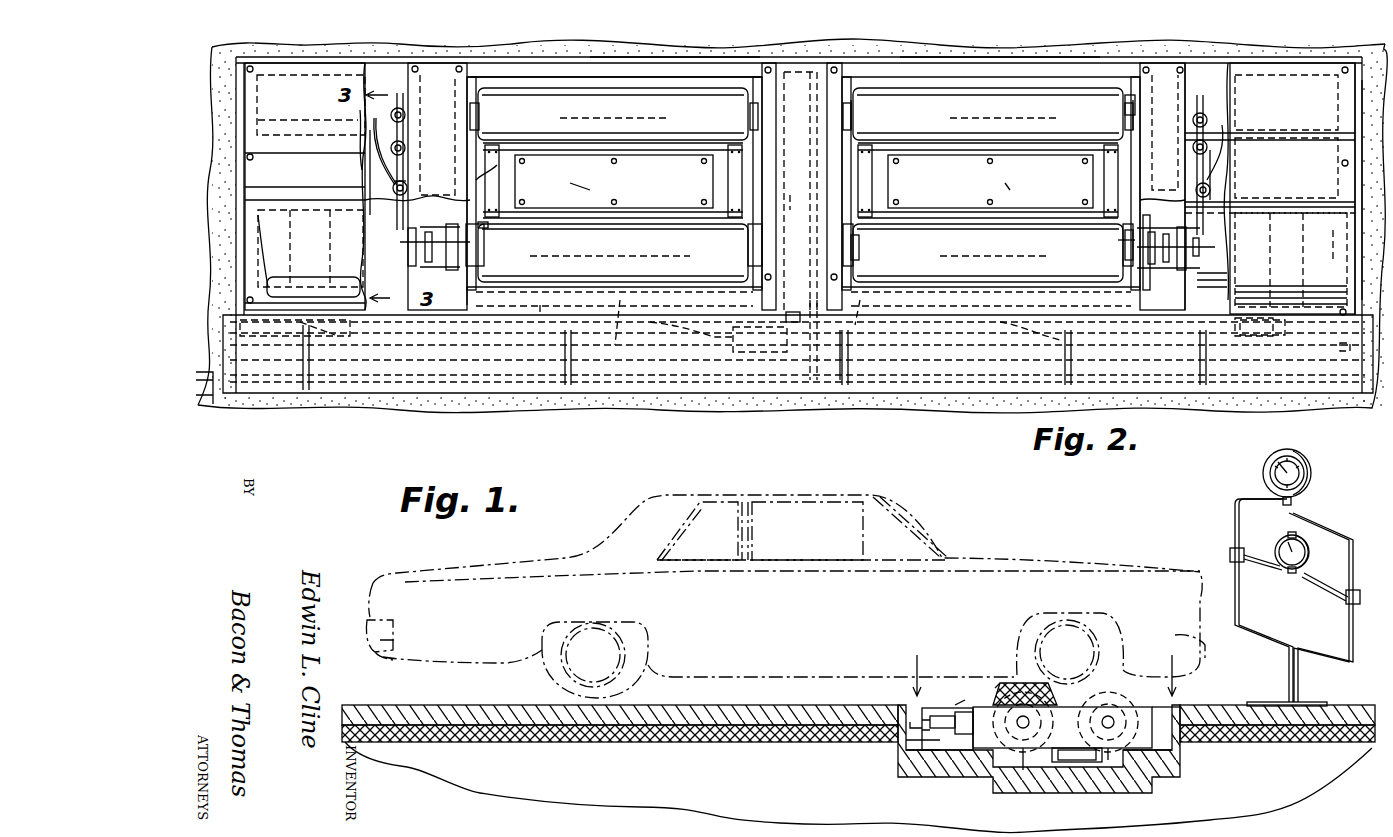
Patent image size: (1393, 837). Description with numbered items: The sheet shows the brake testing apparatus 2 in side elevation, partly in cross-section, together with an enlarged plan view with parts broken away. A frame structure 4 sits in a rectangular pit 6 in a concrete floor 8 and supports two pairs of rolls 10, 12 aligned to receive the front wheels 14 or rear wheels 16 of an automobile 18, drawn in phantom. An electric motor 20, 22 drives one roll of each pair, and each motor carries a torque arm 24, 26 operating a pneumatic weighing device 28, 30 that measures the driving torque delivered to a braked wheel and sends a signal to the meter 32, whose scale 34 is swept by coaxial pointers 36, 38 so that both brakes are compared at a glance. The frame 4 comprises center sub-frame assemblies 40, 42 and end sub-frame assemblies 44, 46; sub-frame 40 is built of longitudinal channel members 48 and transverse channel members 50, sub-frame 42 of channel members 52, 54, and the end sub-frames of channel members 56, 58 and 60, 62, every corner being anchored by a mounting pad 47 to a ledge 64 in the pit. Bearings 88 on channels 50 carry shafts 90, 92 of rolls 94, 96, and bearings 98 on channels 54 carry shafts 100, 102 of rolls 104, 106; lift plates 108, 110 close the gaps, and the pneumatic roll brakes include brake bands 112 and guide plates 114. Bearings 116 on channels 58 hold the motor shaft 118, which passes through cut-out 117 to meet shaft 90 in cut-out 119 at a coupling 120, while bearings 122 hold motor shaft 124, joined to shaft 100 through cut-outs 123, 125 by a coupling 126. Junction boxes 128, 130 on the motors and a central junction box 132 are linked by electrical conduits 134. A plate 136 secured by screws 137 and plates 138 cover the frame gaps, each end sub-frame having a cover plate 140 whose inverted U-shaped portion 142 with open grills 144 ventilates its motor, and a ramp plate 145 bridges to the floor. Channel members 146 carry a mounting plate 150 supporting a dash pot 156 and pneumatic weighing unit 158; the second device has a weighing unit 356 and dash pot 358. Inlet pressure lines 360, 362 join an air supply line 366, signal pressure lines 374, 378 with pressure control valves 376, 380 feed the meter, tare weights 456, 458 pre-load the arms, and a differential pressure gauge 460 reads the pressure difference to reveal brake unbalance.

In FIG. 1, the brake testing apparatus 2 is at (1311, 703).
In FIG. 2, the frame structure 4 is at (565, 68).
In FIG. 1, the frame structure 4 is at (1137, 702).
In FIG. 1, the pit 6 is at (898, 767).
In FIG. 1, the concrete floor 8 is at (772, 705).
In FIG. 2, the pair of rolls 10 is at (564, 204).
In FIG. 2, the pair of rolls 12 is at (979, 204).
In FIG. 1, the pair of rolls 12 is at (1079, 692).
In FIG. 1, the front wheels 14 is at (1025, 648).
In FIG. 1, the rear wheels 16 is at (640, 650).
In FIG. 1, the automobile 18 is at (900, 510).
In FIG. 2, the electric motor 20 is at (320, 212).
In FIG. 2, the electric motor 22 is at (1210, 250).
In FIG. 1, the electric motor 22 is at (1028, 765).
In FIG. 2, the torque arm 24 is at (405, 155).
In FIG. 2, the torque arm 26 is at (1195, 163).
In FIG. 2, the pneumatic weighing device 28 is at (373, 171).
In FIG. 2, the pneumatic weighing device 30 is at (1225, 150).
In FIG. 1, the meter 32 is at (1320, 458).
In FIG. 1, the scale 34 is at (1270, 474).
In FIG. 1, the pointer 36 is at (1275, 465).
In FIG. 1, the pointer 38 is at (1305, 474).
In FIG. 2, the center sub-frame assembly 40 is at (665, 62).
In FIG. 2, the center sub-frame assembly 42 is at (1025, 62).
In FIG. 2, the end sub-frame assembly 44 is at (270, 70).
In FIG. 2, the end sub-frame assembly 46 is at (1280, 62).
In FIG. 1, the mounting pad 47 is at (968, 755).
In FIG. 2, the longitudinal channel members 48 is at (565, 82).
In FIG. 2, the transverse channel members 50 is at (476, 200).
In FIG. 2, the longitudinal channel members 52 is at (945, 82).
In FIG. 2, the transverse channel members 54 is at (815, 145).
In FIG. 2, the longitudinal channel members 56 is at (292, 82).
In FIG. 2, the transverse channel members 58 is at (408, 335).
In FIG. 2, the longitudinal channel members 60 is at (1205, 63).
In FIG. 2, the transverse channel members 62 is at (1345, 98).
In FIG. 1, the transverse channel members 62 is at (1152, 735).
In FIG. 1, the ledge 64 is at (925, 762).
In FIG. 2, the bearings 88 is at (470, 108).
In FIG. 2, the shaft 90 is at (479, 295).
In FIG. 2, the shaft 92 is at (480, 108).
In FIG. 2, the roll 94 is at (582, 217).
In FIG. 2, the roll 96 is at (592, 148).
In FIG. 2, the bearings 98 is at (851, 108).
In FIG. 2, the shaft 100 is at (1118, 248).
In FIG. 2, the shaft 102 is at (1124, 110).
In FIG. 2, the roll 104 is at (1005, 217).
In FIG. 2, the roll 106 is at (1028, 148).
In FIG. 1, the roll 106 is at (1118, 704).
In FIG. 2, the lift plate 108 is at (662, 143).
In FIG. 2, the lift plate 110 is at (958, 143).
In FIG. 2, the brake bands 112 is at (490, 148).
In FIG. 2, the guide plates 114 is at (497, 182).
In FIG. 2, the bearings 116 is at (244, 222).
In FIG. 2, the cut-out 117 is at (405, 240).
In FIG. 2, the shaft 118 is at (424, 247).
In FIG. 2, the cut-out 119 is at (482, 228).
In FIG. 2, the coupling 120 is at (445, 258).
In FIG. 2, the bearings 122 is at (1350, 240).
In FIG. 2, the cut-out 123 is at (1125, 258).
In FIG. 2, the shaft 124 is at (1210, 235).
In FIG. 2, the cut-out 125 is at (1205, 247).
In FIG. 2, the coupling 126 is at (1158, 232).
In FIG. 2, the junction box 128 is at (280, 325).
In FIG. 2, the junction box 130 is at (1265, 325).
In FIG. 1, the junction box 130 is at (975, 750).
In FIG. 2, the central junction box 132 is at (862, 362).
In FIG. 1, the central junction box 132 is at (930, 716).
In FIG. 2, the electrical conduits 134 is at (1018, 342).
In FIG. 1, the electrical conduits 134 is at (922, 733).
In FIG. 2, the plate 136 is at (855, 248).
In FIG. 2, the screws 137 is at (768, 62).
In FIG. 2, the plates 138 is at (430, 66).
In FIG. 2, the cover plate 140 is at (327, 99).
In FIG. 2, the inverted U-shaped portion 142 is at (270, 215).
In FIG. 1, the inverted U-shaped portion 142 is at (1000, 683).
In FIG. 1, the open grill 144 is at (995, 660).
In FIG. 2, the ramp plate 145 is at (830, 395).
In FIG. 1, the ramp plate 145 is at (958, 705).
In FIG. 2, the channel members 146 is at (370, 178).
In FIG. 2, the mounting plate 150 is at (405, 152).
In FIG. 1, the mounting plate 150 is at (1077, 762).
In FIG. 2, the dash pot 156 is at (405, 140).
In FIG. 2, the pneumatic weighing unit 158 is at (408, 178).
In FIG. 2, the pneumatic weighing unit 356 is at (1212, 185).
In FIG. 2, the dash pot 358 is at (1195, 140).
In FIG. 2, the inlet pressure line 360 is at (750, 310).
In FIG. 2, the inlet pressure line 362 is at (873, 305).
In FIG. 2, the air supply line 366 is at (614, 315).
In FIG. 2, the signal pressure line 374 is at (368, 120).
In FIG. 1, the signal pressure line 374 is at (1235, 531).
In FIG. 2, the pressure control valve 376 is at (378, 178).
In FIG. 2, the signal pressure line 378 is at (815, 68).
In FIG. 1, the signal pressure line 378 is at (1345, 535).
In FIG. 2, the pressure control valve 380 is at (1218, 168).
In FIG. 2, the tare weight 456 is at (393, 100).
In FIG. 2, the tare weight 458 is at (1202, 112).
In FIG. 1, the differential pressure gauge 460 is at (1318, 548).